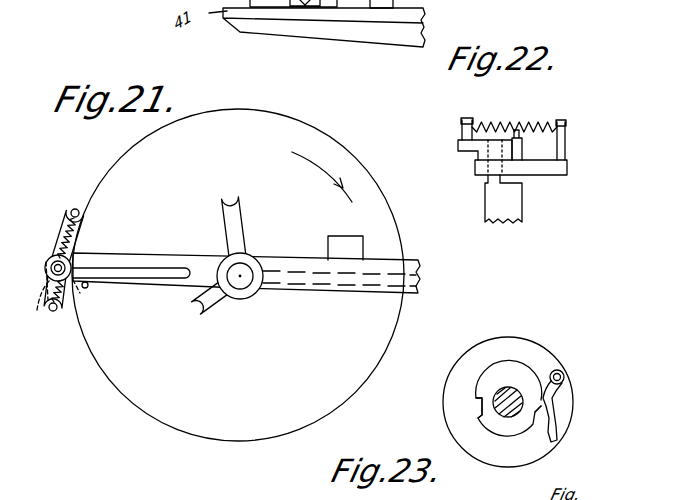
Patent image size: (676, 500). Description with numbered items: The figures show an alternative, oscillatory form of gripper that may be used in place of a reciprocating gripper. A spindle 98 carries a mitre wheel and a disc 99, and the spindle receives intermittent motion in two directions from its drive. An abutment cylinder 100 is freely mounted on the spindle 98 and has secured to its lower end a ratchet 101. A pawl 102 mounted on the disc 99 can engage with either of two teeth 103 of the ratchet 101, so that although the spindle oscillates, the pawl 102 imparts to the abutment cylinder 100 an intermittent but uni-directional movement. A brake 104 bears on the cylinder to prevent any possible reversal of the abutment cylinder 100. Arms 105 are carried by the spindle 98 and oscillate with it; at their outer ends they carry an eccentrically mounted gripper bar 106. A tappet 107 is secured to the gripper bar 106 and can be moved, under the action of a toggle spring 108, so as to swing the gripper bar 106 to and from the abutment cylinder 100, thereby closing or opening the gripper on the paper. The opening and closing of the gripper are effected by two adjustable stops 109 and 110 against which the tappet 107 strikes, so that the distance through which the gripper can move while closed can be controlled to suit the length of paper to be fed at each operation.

In FIG. 23, the spindle 98 is at (507, 413).
In FIG. 23, the disc 99 is at (517, 342).
In FIG. 21, the abutment cylinder 100 is at (131, 390).
In FIG. 23, the ratchet 101 is at (493, 378).
In FIG. 23, the pawl 102 is at (548, 390).
In FIG. 23, the teeth 103 is at (477, 403).
In FIG. 21, the brake 104 is at (343, 248).
In FIG. 21, the arms 105 is at (148, 258).
In FIG. 22, the arms 105 is at (538, 170).
In FIG. 21, the gripper bar 106 is at (52, 312).
In FIG. 22, the gripper bar 106 is at (522, 220).
In FIG. 21, the tappet 107 is at (171, 278).
In FIG. 22, the tappet 107 is at (513, 124).
In FIG. 21, the toggle spring 108 is at (73, 209).
In FIG. 22, the toggle spring 108 is at (530, 110).
In FIG. 21, the adjustable stop 109 is at (208, 312).
In FIG. 21, the adjustable stop 110 is at (242, 200).